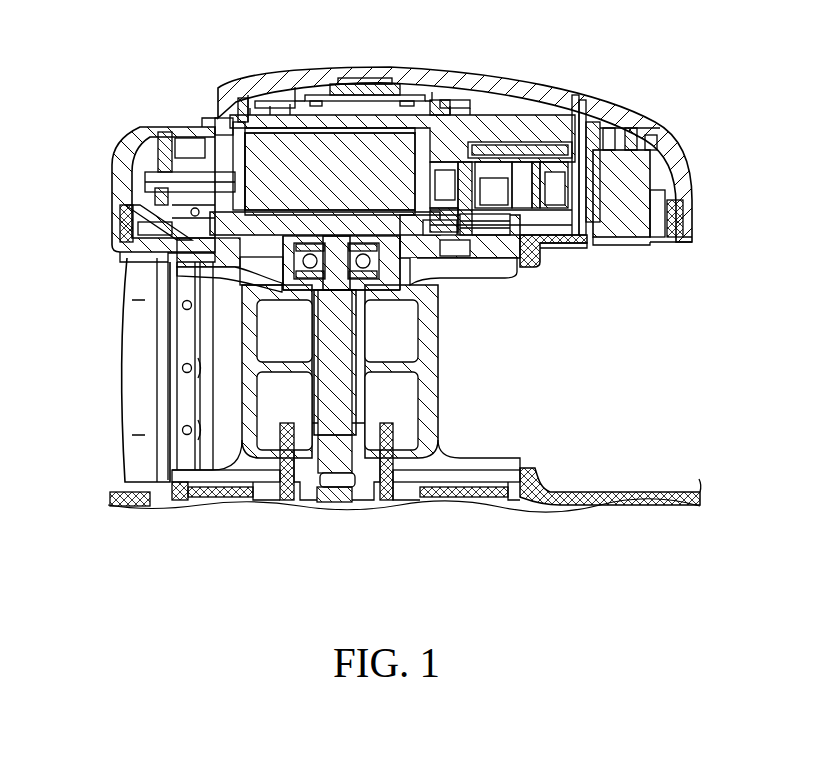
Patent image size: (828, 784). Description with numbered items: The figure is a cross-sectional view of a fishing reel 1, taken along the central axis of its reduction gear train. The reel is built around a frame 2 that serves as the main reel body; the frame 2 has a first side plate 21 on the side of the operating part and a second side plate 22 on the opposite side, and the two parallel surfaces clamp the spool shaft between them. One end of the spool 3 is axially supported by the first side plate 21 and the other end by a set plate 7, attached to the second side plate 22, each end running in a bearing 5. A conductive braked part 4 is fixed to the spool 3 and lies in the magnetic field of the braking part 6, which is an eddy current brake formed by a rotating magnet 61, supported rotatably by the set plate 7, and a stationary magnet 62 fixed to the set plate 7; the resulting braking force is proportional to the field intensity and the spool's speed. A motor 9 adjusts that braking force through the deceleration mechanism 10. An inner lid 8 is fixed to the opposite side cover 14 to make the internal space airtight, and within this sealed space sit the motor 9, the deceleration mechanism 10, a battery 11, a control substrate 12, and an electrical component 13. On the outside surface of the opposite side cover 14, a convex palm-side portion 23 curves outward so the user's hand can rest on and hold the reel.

The fishing reel 1 is at (340, 513).
The frame 2 is at (404, 390).
The first side plate 21 is at (404, 507).
The second side plate 22 is at (575, 281).
The spool 3 is at (440, 458).
The braked part 4 is at (412, 278).
The bearing 5 is at (372, 265).
The braking part 6 is at (142, 360).
The rotating magnet 61 is at (225, 238).
The stationary magnet 62 is at (262, 250).
The set plate 7 is at (168, 253).
The inner lid 8 is at (130, 200).
The motor 9 is at (613, 212).
The deceleration mechanism 10 is at (566, 147).
The battery 11 is at (273, 167).
The control substrate 12 is at (300, 118).
The electrical component 13 is at (360, 96).
The opposite side cover 14 is at (663, 133).
The palm-side portion 23 is at (405, 80).